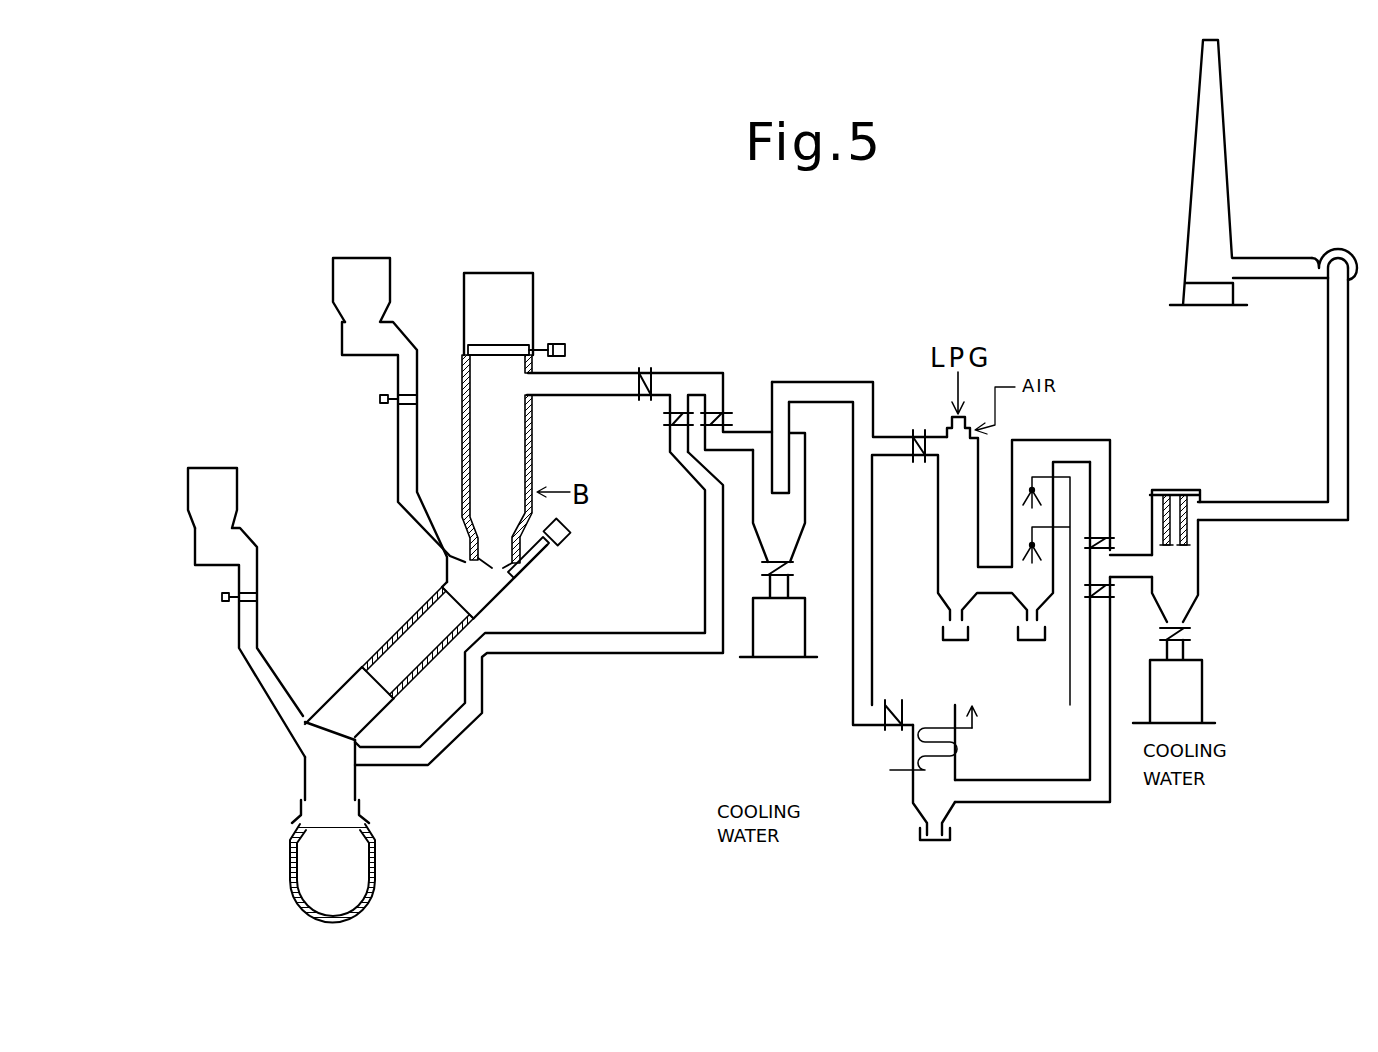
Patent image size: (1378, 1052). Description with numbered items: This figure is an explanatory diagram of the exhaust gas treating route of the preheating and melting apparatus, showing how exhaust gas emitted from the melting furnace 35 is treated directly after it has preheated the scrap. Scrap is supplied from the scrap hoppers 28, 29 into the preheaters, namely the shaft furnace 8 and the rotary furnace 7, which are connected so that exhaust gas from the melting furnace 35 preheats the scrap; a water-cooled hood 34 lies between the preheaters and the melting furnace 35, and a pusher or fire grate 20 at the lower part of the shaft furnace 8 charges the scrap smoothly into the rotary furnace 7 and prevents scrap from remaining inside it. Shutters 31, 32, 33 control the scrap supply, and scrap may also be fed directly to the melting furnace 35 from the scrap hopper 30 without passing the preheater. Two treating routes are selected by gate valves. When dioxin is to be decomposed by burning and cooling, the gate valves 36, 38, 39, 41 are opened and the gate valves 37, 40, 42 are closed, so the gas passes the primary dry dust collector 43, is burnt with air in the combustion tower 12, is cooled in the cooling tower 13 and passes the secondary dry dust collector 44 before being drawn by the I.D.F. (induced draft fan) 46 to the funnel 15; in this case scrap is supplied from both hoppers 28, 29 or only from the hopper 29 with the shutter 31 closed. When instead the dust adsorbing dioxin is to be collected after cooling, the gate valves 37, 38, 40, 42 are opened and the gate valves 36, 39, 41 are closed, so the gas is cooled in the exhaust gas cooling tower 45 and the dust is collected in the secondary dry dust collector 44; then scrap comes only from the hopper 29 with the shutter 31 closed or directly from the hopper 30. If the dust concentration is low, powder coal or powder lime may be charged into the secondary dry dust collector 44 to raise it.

The rotary furnace 7 is at (388, 628).
The shaft furnace 8 is at (512, 433).
The combustion tower 12 is at (938, 505).
The cooling tower 13 is at (1042, 447).
The funnel 15 is at (1220, 178).
The pusher or fire grate 20 is at (565, 543).
The scrap hopper 28 is at (385, 280).
The scrap hopper 29 is at (533, 290).
The scrap hopper 30 is at (237, 492).
The shutter 31 is at (380, 398).
The shutter 32 is at (560, 342).
The shutter 33 is at (222, 602).
The water-cooled hood 34 is at (305, 757).
The melting furnace 35 is at (297, 850).
The gate valve 36 is at (650, 372).
The gate valve 37 is at (668, 418).
The gate valve 38 is at (716, 406).
The gate valve 39 is at (912, 432).
The gate valve 40 is at (893, 700).
The gate valve 41 is at (1097, 532).
The gate valve 42 is at (1100, 600).
The primary dry dust collector 43 is at (807, 467).
The secondary dry dust collector 44 is at (1200, 575).
The exhaust gas cooling tower 45 is at (912, 795).
The I.D.F. (induced draft fan) 46 is at (1337, 250).